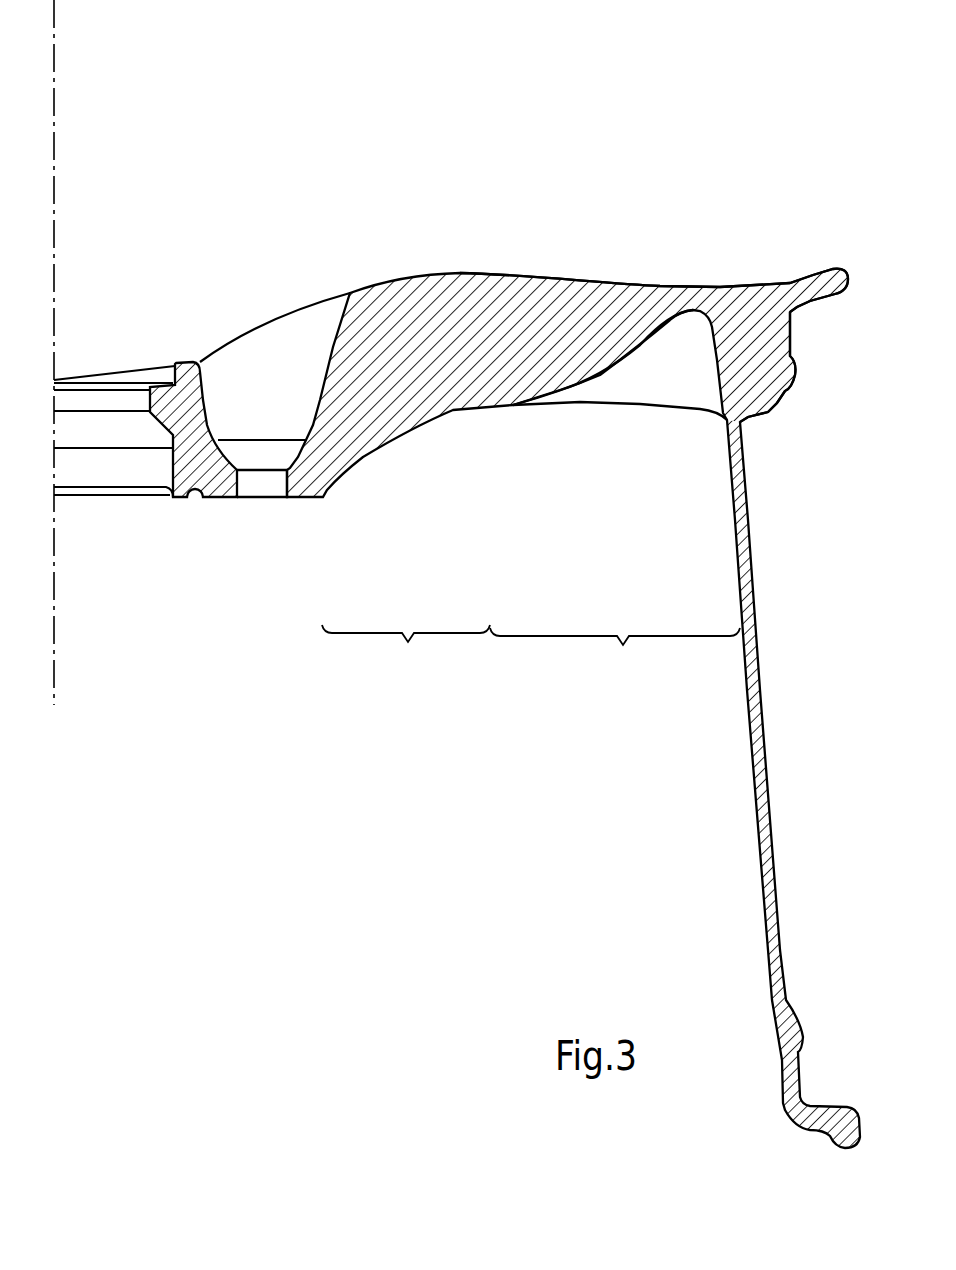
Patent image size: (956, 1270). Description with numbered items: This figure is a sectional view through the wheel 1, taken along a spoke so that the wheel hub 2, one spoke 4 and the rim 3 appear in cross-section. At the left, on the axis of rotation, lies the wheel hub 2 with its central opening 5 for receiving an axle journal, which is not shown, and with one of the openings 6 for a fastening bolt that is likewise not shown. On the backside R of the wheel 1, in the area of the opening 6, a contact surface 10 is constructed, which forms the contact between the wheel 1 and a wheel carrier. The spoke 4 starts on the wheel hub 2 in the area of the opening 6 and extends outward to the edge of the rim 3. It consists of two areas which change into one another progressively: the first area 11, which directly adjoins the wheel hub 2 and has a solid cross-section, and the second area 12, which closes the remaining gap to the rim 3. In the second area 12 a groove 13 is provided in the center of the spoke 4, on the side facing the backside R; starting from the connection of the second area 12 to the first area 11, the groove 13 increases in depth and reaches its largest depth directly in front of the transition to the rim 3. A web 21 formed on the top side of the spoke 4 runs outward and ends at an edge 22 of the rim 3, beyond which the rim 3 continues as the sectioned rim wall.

The wheel 1 is at (499, 226).
The wheel hub 2 is at (292, 542).
The rim 3 is at (768, 378).
The spoke 4 is at (497, 385).
The central opening 5 is at (107, 473).
The opening 6 is at (253, 487).
The contact surface 10 is at (300, 500).
The first area 11 is at (406, 655).
The second area 12 is at (615, 656).
The groove 13 is at (660, 375).
The web 21 is at (590, 282).
The edge 22 is at (790, 282).
The backside R is at (189, 591).